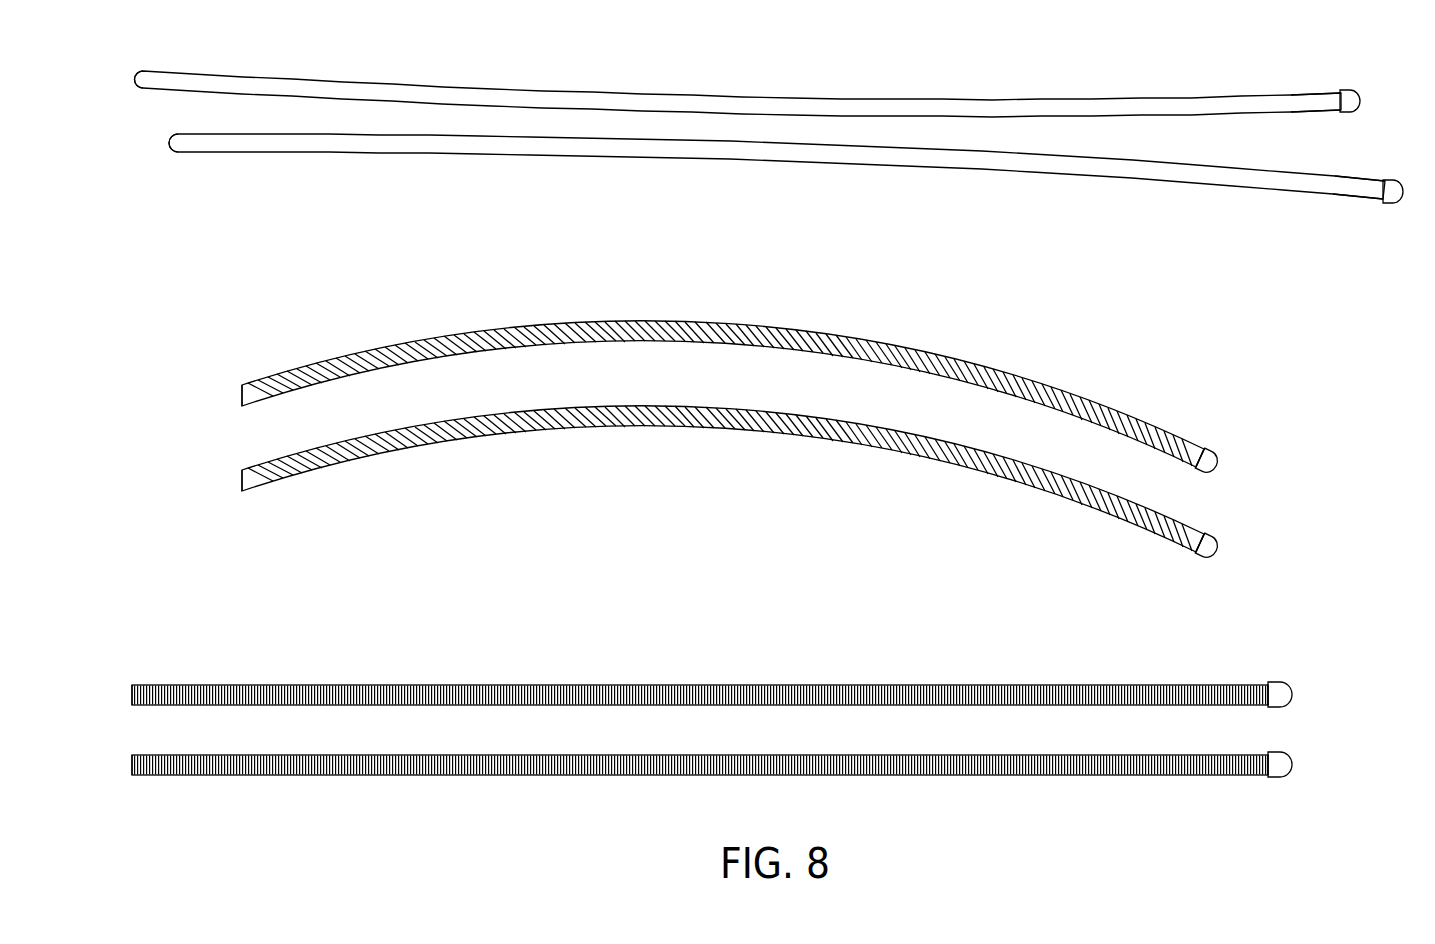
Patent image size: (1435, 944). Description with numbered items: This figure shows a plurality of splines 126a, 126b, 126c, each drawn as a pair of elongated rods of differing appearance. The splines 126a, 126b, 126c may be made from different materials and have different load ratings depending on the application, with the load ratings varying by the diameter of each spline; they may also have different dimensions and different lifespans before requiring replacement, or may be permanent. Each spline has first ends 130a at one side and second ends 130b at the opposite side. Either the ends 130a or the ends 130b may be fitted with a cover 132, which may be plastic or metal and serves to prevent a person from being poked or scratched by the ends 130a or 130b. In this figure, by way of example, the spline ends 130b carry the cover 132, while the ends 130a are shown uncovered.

The spline 126a is at (850, 155).
The spline 126b is at (833, 433).
The spline 126c is at (1010, 768).
The spline end 130a is at (134, 79).
The spline end 130b is at (1340, 94).
The cover 132 is at (1362, 97).